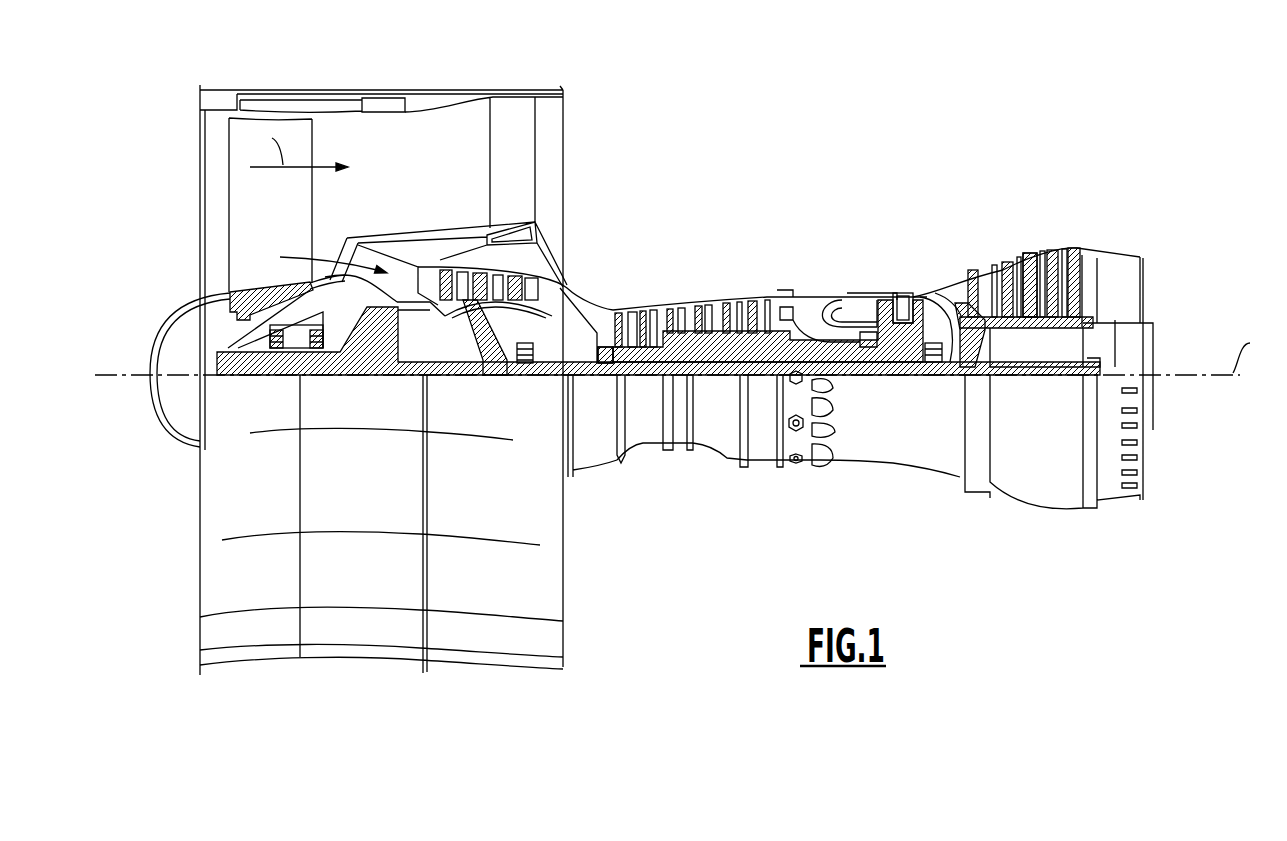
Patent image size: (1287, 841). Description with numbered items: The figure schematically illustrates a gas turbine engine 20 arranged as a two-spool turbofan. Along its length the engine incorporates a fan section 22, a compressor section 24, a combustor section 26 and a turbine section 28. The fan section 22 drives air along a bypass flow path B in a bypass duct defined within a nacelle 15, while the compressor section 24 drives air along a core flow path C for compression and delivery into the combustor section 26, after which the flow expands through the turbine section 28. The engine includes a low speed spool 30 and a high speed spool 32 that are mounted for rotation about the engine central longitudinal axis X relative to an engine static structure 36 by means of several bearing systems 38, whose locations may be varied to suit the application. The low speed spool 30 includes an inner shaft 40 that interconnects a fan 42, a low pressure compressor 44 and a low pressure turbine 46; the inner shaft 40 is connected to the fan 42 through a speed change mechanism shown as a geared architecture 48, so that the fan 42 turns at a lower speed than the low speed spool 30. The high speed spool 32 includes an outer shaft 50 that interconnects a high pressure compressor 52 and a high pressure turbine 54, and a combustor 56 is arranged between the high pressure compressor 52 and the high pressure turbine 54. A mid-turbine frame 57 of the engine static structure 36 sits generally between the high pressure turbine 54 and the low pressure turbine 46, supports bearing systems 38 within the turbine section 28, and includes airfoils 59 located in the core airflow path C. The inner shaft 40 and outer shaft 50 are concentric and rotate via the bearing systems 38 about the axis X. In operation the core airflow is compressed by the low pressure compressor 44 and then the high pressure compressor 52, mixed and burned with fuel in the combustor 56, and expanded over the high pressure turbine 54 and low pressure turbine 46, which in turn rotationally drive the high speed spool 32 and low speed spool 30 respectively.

The gas turbine engine 20 is at (848, 137).
The fan section 22 is at (311, 82).
The nacelle 15 is at (379, 92).
The fan 42 is at (285, 221).
The low pressure compressor 44 is at (483, 285).
The geared architecture 48 is at (388, 358).
The bearing systems 38 is at (520, 357).
The compressor section 24 is at (616, 276).
The high pressure compressor 52 is at (697, 347).
The combustor section 26 is at (835, 262).
The high speed spool 32 is at (762, 313).
The combustor 56 is at (837, 317).
The high pressure turbine 54 is at (900, 297).
The turbine section 28 is at (986, 227).
The low pressure turbine 46 is at (1030, 270).
The mid-turbine frame 57 is at (951, 270).
The airfoils 59 is at (973, 343).
The inner shaft 40 is at (583, 375).
The low speed spool 30 is at (722, 389).
The engine static structure 36 is at (760, 472).
The outer shaft 50 is at (845, 362).